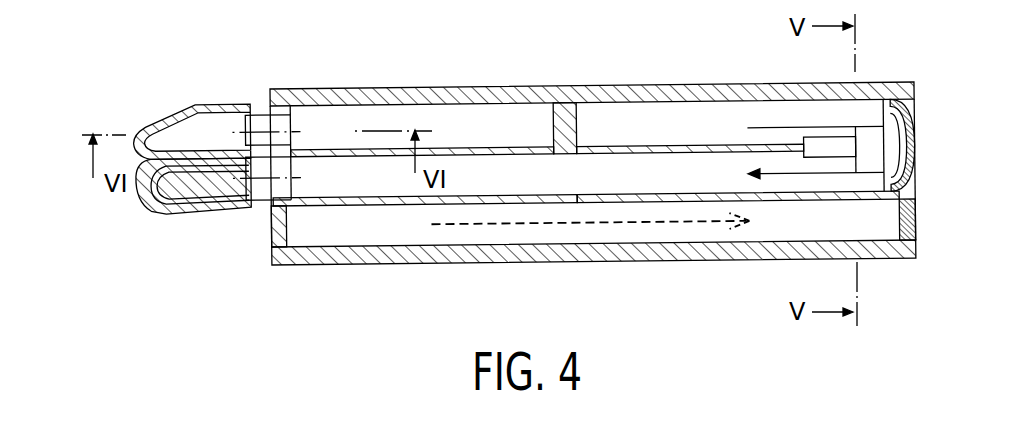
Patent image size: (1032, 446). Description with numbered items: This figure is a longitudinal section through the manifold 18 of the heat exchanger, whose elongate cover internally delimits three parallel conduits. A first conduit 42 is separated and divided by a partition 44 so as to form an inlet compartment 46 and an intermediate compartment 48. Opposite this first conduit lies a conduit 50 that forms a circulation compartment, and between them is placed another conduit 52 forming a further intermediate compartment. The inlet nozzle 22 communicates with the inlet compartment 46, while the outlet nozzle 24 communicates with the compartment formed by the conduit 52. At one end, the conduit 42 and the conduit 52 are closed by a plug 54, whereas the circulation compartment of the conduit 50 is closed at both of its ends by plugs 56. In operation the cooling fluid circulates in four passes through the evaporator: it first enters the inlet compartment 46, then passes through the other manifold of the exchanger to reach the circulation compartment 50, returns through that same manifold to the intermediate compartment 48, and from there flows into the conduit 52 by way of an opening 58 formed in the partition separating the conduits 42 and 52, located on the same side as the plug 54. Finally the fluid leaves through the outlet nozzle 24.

The manifold 18 is at (321, 83).
The inlet nozzle 22 is at (185, 102).
The outlet nozzle 24 is at (193, 213).
The first conduit 42 is at (512, 120).
The partition 44 is at (583, 120).
The inlet compartment 46 is at (366, 120).
The intermediate compartment 48 is at (710, 122).
The conduit forming a circulation compartment 50 is at (602, 236).
The conduit forming an intermediate compartment 52 is at (511, 181).
The plug 54 is at (915, 135).
The plugs 56 is at (268, 238).
The opening 58 is at (867, 150).